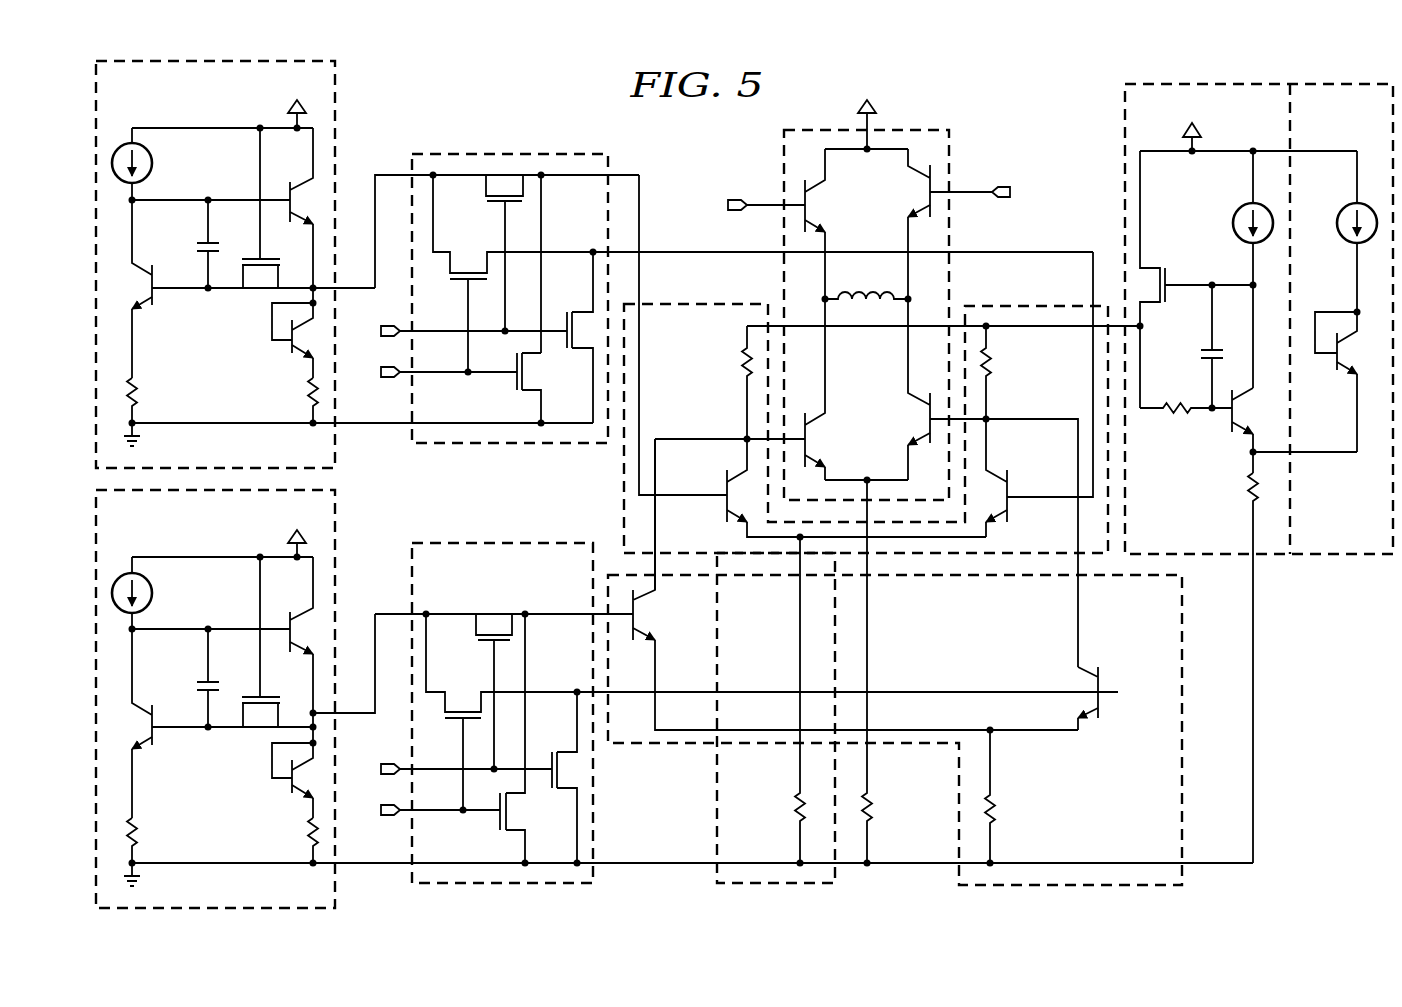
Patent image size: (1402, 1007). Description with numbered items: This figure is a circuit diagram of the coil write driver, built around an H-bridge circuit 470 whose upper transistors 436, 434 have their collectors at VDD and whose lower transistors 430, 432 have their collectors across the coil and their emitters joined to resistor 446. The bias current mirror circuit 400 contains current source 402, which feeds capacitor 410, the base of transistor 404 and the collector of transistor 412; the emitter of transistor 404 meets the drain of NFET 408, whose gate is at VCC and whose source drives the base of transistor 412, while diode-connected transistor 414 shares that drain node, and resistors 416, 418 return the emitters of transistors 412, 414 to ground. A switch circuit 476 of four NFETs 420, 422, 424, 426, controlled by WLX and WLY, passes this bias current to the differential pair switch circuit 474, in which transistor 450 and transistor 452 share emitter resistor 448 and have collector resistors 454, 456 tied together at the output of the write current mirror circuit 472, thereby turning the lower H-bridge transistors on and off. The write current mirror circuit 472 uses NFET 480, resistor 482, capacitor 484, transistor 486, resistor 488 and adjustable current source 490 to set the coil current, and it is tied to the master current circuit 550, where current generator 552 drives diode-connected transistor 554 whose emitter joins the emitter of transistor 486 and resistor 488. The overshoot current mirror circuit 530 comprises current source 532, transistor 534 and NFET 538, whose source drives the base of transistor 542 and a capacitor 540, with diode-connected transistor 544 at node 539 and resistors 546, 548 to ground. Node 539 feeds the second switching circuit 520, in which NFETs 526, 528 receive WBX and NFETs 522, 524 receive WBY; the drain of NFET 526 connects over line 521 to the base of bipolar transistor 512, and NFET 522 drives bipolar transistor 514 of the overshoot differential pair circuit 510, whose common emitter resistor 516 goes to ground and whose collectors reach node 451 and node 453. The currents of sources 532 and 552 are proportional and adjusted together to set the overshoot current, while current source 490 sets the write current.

The bias current mirror circuit 400 is at (336, 101).
The current source 402 is at (152, 165).
The transistor 404 is at (302, 184).
The NFET 408 is at (250, 259).
The capacitor 410 is at (198, 245).
The transistor 412 is at (162, 308).
The transistor 414 is at (290, 352).
The resistor 416 is at (142, 394).
The resistor 418 is at (306, 392).
The NFET 420 is at (500, 205).
The NFET 422 is at (459, 283).
The NFET 424 is at (582, 352).
The NFET 426 is at (512, 386).
The transistor 430 is at (811, 436).
The transistor 432 is at (926, 412).
The transistor 434 is at (926, 184).
The transistor 436 is at (811, 216).
The resistor 446 is at (875, 808).
The resistor 448 is at (792, 806).
The transistor 450 is at (724, 476).
The node 451 is at (745, 437).
The transistor 452 is at (1012, 474).
The node 453 is at (990, 417).
The resistor 454 is at (742, 360).
The resistor 456 is at (996, 360).
The H-bridge circuit 470 is at (924, 130).
The write current mirror circuit 472 is at (1172, 531).
The differential pair switch circuit 474 is at (716, 826).
The switch circuit 476 is at (510, 153).
The NFET 480 is at (1168, 277).
The resistor 482 is at (1176, 402).
The capacitor 484 is at (1200, 350).
The transistor 486 is at (1228, 426).
The resistor 488 is at (1248, 482).
The current source 490 is at (1236, 210).
The overshoot differential pair circuit 510 is at (668, 744).
The bipolar transistor 512 is at (644, 626).
The bipolar transistor 514 is at (1105, 670).
The resistor 516 is at (998, 812).
The second switching circuit 520 is at (498, 543).
The node 521 is at (525, 612).
The NFET 522 is at (452, 722).
The NFET 524 is at (494, 826).
The NFET 526 is at (486, 645).
The NFET 528 is at (568, 794).
The overshoot current mirror circuit 530 is at (336, 513).
The current source 532 is at (152, 595).
The bipolar transistor 534 is at (302, 613).
The NFET 538 is at (250, 697).
The node 539 is at (308, 708).
The capacitor 540 is at (198, 684).
The bipolar transistor 542 is at (162, 747).
The bipolar transistor 544 is at (290, 792).
The resistor 546 is at (142, 834).
The resistor 548 is at (306, 832).
The master current circuit 550 is at (1324, 531).
The current generator 552 is at (1340, 210).
The bipolar transistor 554 is at (1338, 374).